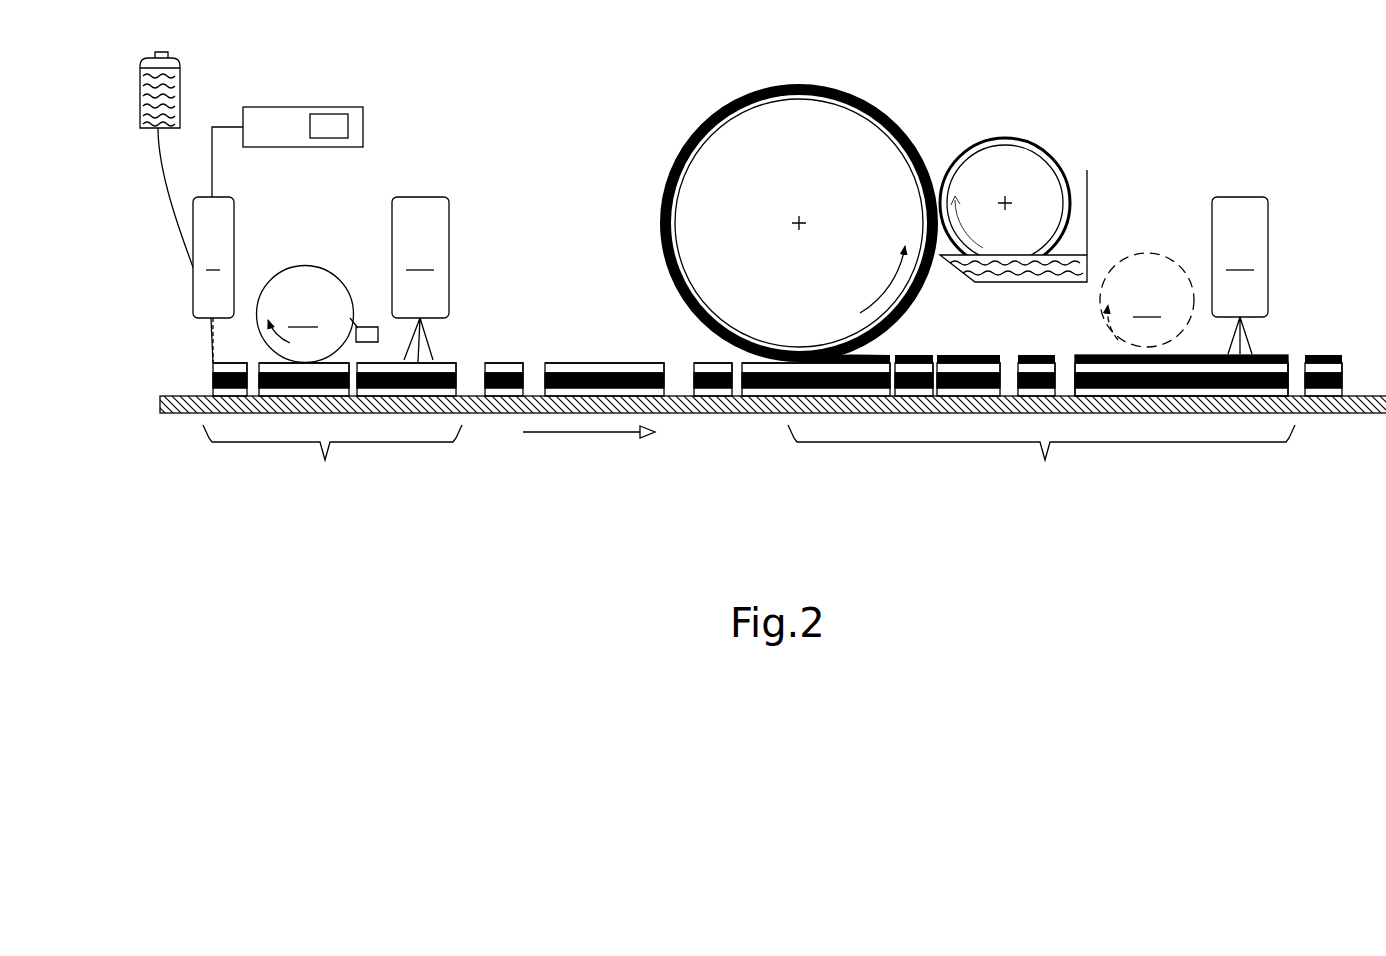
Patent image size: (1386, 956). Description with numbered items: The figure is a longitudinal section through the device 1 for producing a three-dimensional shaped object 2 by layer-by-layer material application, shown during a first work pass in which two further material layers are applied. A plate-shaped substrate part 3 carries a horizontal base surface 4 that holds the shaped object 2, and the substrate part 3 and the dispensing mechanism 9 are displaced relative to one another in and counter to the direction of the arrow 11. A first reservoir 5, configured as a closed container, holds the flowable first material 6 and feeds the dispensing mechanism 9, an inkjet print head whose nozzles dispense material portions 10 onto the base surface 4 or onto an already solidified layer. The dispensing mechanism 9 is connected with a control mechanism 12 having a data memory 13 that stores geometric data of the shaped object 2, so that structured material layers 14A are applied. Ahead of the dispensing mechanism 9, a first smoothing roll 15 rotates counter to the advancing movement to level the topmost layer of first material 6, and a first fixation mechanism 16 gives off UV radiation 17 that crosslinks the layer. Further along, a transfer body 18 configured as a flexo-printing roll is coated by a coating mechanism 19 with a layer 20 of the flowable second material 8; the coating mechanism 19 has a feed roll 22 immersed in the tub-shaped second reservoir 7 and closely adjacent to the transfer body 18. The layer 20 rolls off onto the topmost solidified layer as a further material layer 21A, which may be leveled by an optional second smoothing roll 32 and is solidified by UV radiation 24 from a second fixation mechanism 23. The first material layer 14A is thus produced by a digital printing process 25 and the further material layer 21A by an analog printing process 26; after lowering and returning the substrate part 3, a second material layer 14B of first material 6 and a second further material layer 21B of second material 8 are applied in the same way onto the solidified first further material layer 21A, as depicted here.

The device 1 is at (1142, 588).
The three-dimensional shaped object 2 is at (1203, 353).
The substrate part 3 is at (697, 406).
The base surface 4 is at (182, 392).
The first reservoir 5 is at (176, 62).
The flowable first material 6 is at (182, 98).
The second reservoir 7 is at (1088, 240).
The flowable second material 8 is at (1022, 284).
The dispensing mechanism 9 is at (213, 257).
The material portions 10 is at (214, 345).
The arrow 11 is at (589, 447).
The control mechanism 12 is at (278, 118).
The data memory 13 is at (326, 122).
The first material layer 14A is at (552, 393).
The second material layer 14B is at (708, 362).
The first smoothing roll 15 is at (318, 314).
The first fixation mechanism 16 is at (420, 257).
The UV radiation 17 is at (432, 338).
The transfer body 18 is at (873, 115).
The coating mechanism 19 is at (1106, 140).
The layer of second material 20 is at (825, 83).
The first further material layer 21A is at (545, 386).
The second further material layer 21B is at (960, 355).
The feed roll 22 is at (998, 137).
The second fixation mechanism 23 is at (1240, 257).
The UV radiation 24 is at (1250, 352).
The digital printing process 25 is at (332, 461).
The analog printing process 26 is at (1041, 461).
The second smoothing roll 32 is at (1147, 300).